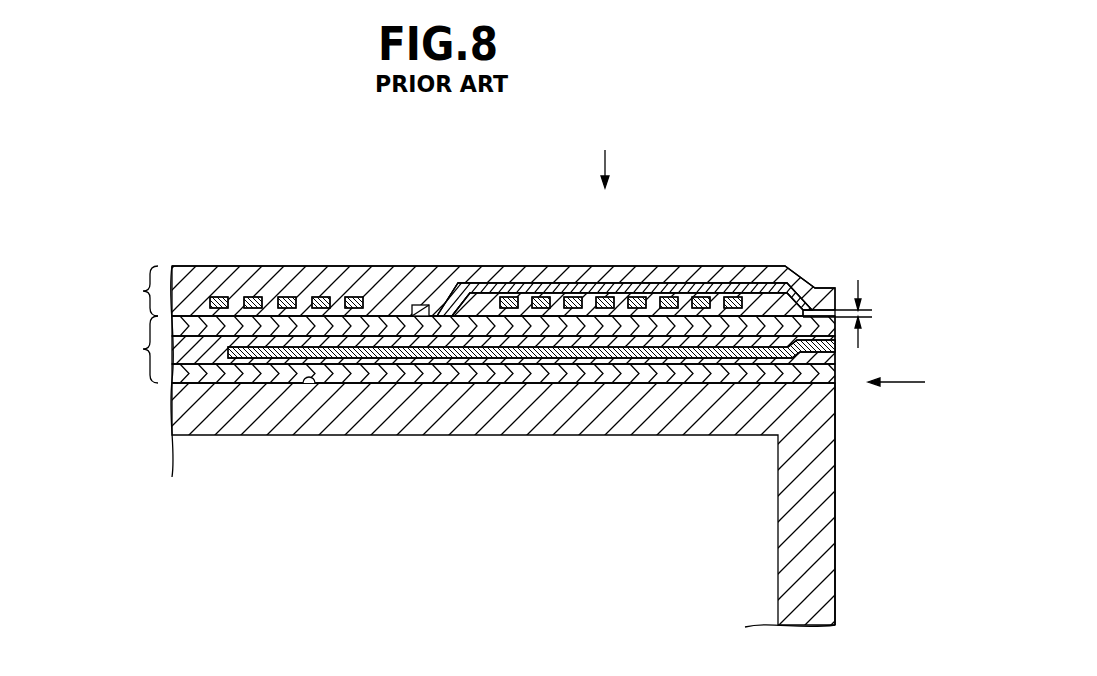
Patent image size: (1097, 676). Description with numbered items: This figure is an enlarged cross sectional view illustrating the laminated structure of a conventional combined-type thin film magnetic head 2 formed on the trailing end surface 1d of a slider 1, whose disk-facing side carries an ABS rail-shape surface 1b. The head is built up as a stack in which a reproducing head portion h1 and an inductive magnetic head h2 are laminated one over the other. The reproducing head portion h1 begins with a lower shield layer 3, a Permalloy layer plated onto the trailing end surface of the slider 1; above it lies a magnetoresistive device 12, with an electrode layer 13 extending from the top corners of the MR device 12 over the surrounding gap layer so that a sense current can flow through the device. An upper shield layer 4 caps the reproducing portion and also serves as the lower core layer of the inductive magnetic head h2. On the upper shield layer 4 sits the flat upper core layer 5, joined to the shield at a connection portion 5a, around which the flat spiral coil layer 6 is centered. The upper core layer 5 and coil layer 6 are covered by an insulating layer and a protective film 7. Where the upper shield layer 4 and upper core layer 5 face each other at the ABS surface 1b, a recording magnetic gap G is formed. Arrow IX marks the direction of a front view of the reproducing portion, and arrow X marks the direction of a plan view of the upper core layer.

The slider 1 is at (803, 552).
The rail-shape surface 1b is at (835, 490).
The trailing end surface 1d is at (302, 385).
The combined-type thin film magnetic head 2 is at (727, 255).
The lower shield layer 3 is at (722, 372).
The upper shield layer 4 is at (655, 325).
The upper core layer 5 is at (527, 283).
The connection portion 5a is at (425, 312).
The coil layer 6 is at (286, 298).
The protective film 7 is at (352, 297).
The magnetoresistive device 12 is at (837, 367).
The electrode layer 13 is at (588, 360).
The recording magnetic gap G is at (882, 314).
The reproducing head portion h1 is at (143, 349).
The inductive magnetic head h2 is at (143, 291).
The arrow X is at (605, 156).
The arrow IX is at (912, 382).